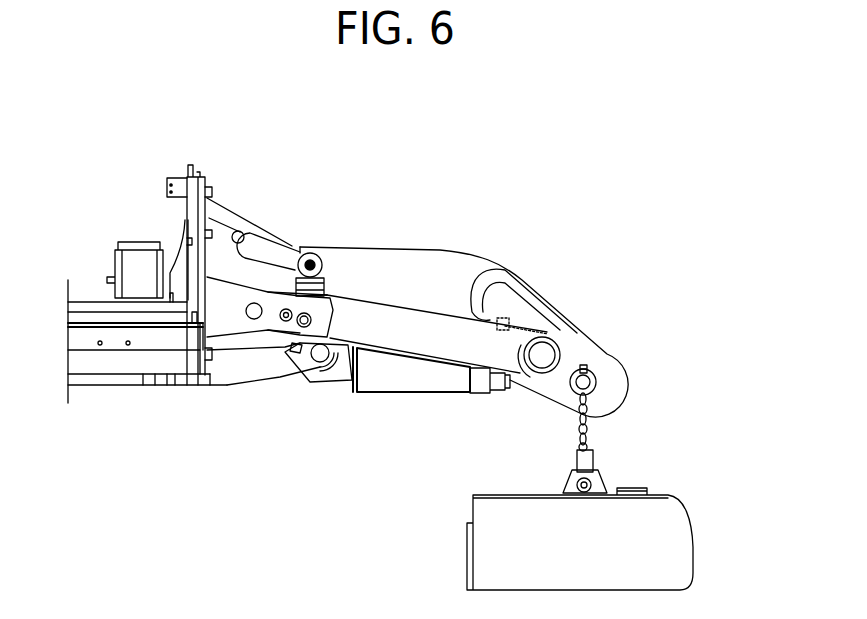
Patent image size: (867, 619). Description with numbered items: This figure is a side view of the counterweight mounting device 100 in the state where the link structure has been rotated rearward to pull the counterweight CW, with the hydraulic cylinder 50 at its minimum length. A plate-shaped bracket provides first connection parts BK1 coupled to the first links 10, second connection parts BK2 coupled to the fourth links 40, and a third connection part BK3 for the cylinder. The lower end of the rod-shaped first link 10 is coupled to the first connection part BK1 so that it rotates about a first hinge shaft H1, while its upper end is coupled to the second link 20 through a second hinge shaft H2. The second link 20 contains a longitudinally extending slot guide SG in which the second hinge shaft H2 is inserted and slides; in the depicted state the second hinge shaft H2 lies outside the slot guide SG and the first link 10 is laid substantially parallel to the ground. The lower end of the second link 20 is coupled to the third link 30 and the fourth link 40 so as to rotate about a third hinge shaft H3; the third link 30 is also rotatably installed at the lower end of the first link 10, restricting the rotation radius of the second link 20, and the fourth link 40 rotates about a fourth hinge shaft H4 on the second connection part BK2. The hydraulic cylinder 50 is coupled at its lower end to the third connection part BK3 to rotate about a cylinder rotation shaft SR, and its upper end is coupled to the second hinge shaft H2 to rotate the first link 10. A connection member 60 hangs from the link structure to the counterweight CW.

The counterweight mounting device 100 is at (637, 154).
The first link 10 is at (440, 333).
The second link 20 is at (428, 260).
The third link 30 is at (323, 295).
The fourth link 40 is at (280, 245).
The hydraulic cylinder 50 is at (410, 378).
The connection member 60 is at (577, 425).
The first connection part BK1 is at (215, 330).
The second connection part BK2 is at (235, 220).
The third connection part BK3 is at (262, 346).
The first hinge shaft H1 is at (247, 303).
The second hinge shaft H2 is at (547, 353).
The third hinge shaft H3 is at (316, 252).
The fourth hinge shaft H4 is at (238, 231).
The slot guide SG is at (510, 300).
The cylinder rotation shaft SR is at (322, 357).
The counterweight CW is at (488, 513).